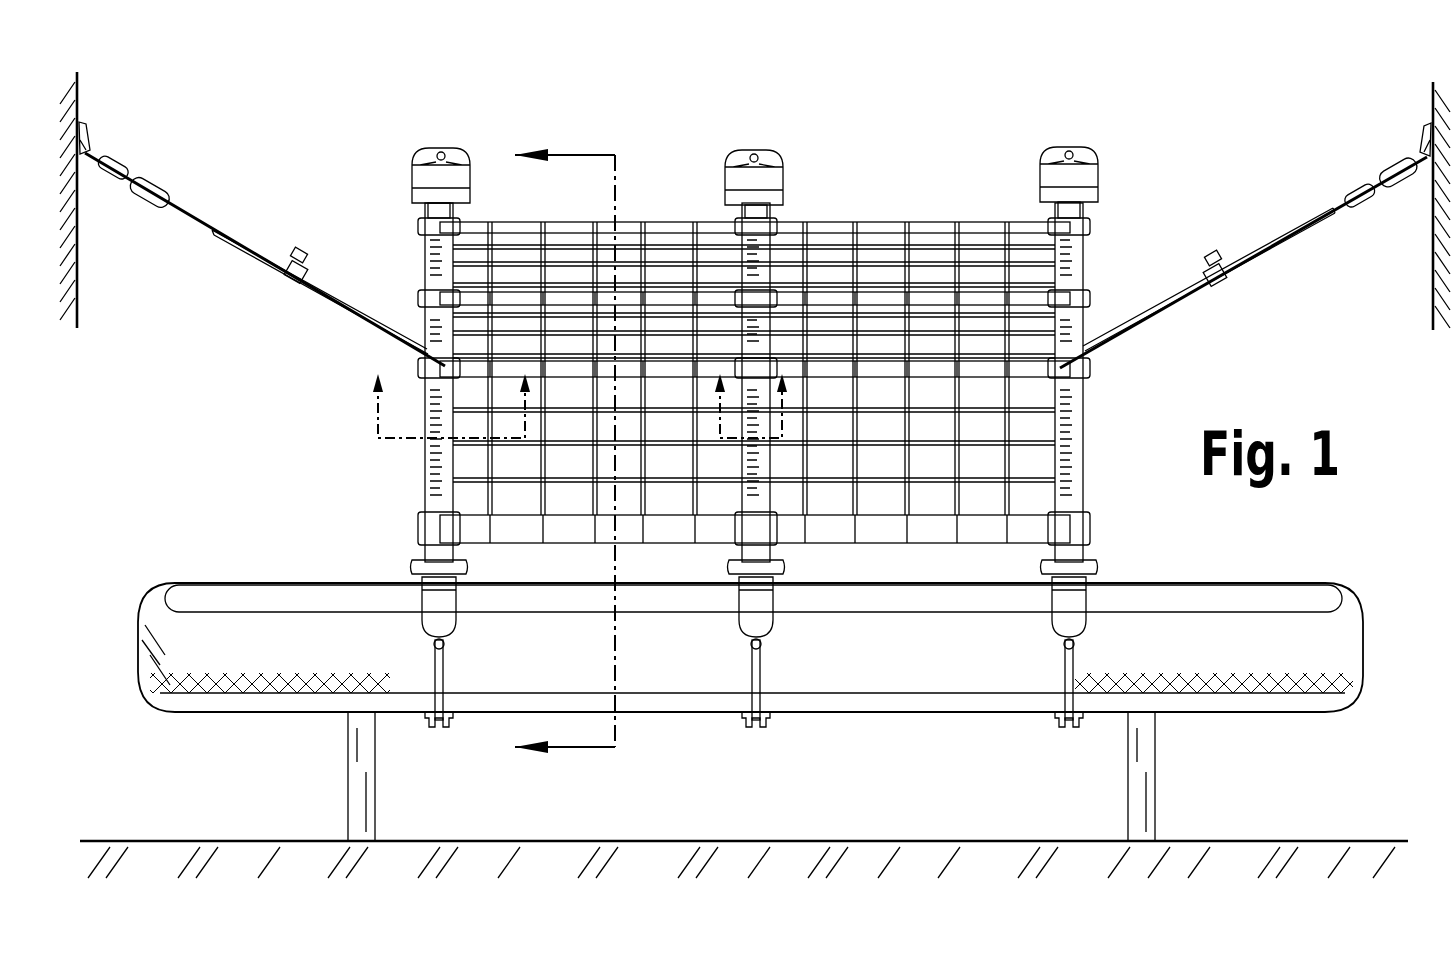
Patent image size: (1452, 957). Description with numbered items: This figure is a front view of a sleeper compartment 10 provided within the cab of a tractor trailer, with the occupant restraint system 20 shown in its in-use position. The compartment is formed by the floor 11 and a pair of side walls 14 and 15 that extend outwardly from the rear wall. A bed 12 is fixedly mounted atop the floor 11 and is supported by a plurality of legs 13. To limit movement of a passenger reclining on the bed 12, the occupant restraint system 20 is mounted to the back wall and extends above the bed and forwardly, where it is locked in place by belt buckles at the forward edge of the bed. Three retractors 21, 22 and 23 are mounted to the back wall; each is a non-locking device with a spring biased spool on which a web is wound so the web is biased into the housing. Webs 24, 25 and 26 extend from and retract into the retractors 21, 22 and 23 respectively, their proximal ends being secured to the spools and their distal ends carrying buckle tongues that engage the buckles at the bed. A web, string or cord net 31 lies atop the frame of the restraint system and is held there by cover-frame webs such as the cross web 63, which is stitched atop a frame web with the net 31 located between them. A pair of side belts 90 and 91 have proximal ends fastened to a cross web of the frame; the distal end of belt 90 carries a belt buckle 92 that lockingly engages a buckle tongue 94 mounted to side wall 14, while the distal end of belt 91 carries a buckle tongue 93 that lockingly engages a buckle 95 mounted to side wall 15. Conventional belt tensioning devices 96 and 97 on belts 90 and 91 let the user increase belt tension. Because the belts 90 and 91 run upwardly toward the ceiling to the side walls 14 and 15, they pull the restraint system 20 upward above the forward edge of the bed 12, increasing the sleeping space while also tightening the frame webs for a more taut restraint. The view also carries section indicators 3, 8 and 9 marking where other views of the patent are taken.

The sleeper compartment 10 is at (756, 452).
The floor 11 is at (1210, 838).
The bed 12 is at (1200, 628).
The legs 13 is at (365, 811).
The side wall 14 is at (80, 100).
The side wall 15 is at (1432, 104).
The occupant restraint system 20 is at (755, 326).
The retractor 21 is at (412, 165).
The retractor 22 is at (730, 172).
The retractor 23 is at (1045, 172).
The web 24 is at (425, 208).
The web 25 is at (742, 212).
The web 26 is at (1057, 212).
The net 31 is at (857, 265).
The cross web 63 is at (498, 227).
The side belt 90 is at (265, 230).
The side belt 91 is at (1243, 235).
The belt buckle 92 is at (155, 188).
The buckle tongue 93 is at (1345, 195).
The buckle tongue 94 is at (110, 160).
The buckle 95 is at (1397, 172).
The belt tensioning device 96 is at (305, 272).
The belt tensioning device 97 is at (1205, 272).
The section line 3- 3 is at (564, 451).
The section line 8- 8 is at (451, 406).
The section line 9- 9 is at (751, 406).